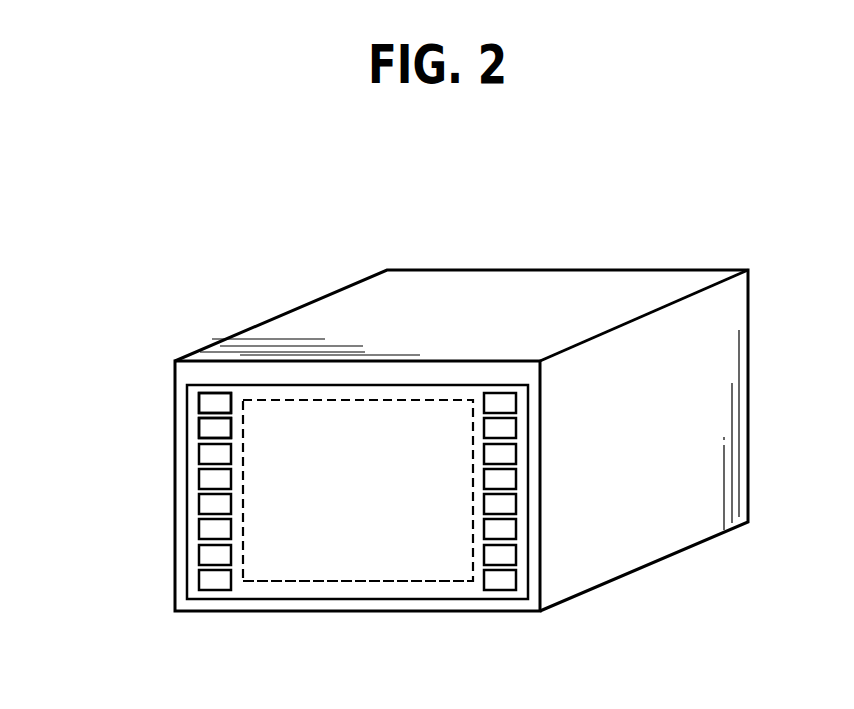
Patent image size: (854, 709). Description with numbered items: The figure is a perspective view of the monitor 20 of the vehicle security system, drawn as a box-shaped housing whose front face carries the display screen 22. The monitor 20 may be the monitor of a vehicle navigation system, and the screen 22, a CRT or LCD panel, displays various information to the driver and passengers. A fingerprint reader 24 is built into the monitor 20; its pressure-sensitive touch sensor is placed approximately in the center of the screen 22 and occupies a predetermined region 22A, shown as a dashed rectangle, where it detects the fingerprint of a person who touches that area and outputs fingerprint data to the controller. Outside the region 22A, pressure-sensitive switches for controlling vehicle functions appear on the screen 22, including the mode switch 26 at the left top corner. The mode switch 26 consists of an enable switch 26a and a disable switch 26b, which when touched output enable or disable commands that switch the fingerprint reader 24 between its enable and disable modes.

The monitor 20 is at (588, 268).
The display screen 22 is at (326, 388).
The predetermined region 22A is at (428, 552).
The fingerprint reader 24 is at (303, 581).
The mode switch 26 is at (82, 320).
The enable switch 26a is at (200, 402).
The disable switch 26b is at (200, 429).